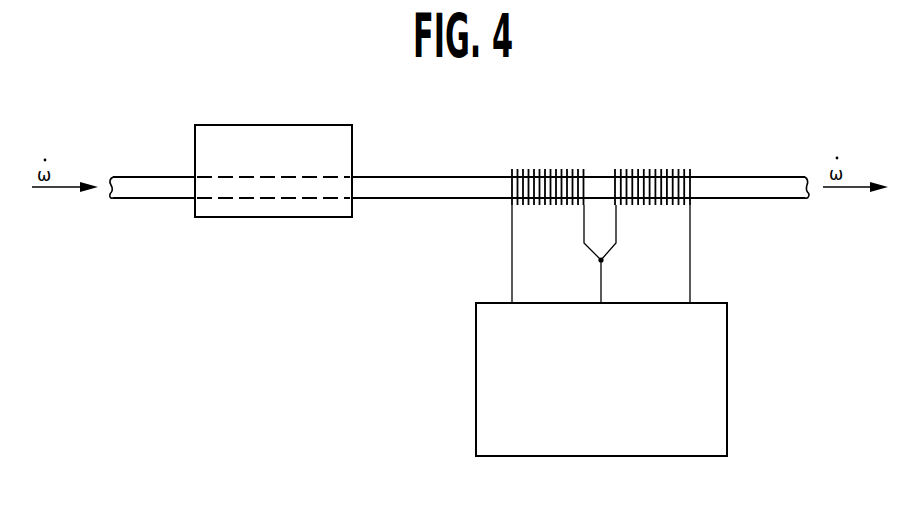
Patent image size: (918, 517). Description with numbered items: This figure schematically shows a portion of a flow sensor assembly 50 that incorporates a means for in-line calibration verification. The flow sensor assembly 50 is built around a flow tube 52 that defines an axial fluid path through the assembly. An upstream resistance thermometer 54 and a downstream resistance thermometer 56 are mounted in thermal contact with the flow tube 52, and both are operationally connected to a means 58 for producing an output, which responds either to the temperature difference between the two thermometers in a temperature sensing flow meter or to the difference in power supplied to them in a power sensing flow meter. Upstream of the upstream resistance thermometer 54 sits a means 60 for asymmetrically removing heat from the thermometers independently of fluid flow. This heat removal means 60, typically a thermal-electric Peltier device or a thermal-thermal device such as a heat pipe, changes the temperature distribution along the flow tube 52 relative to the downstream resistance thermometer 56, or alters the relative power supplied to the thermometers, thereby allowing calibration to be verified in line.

The flow sensor assembly 50 is at (173, 99).
The flow tube 52 is at (446, 199).
The upstream resistance thermometer 54 is at (551, 169).
The downstream resistance thermometer 56 is at (654, 169).
The means for producing an output 58 is at (476, 326).
The means for asymmetrically removing heat 60 is at (257, 218).